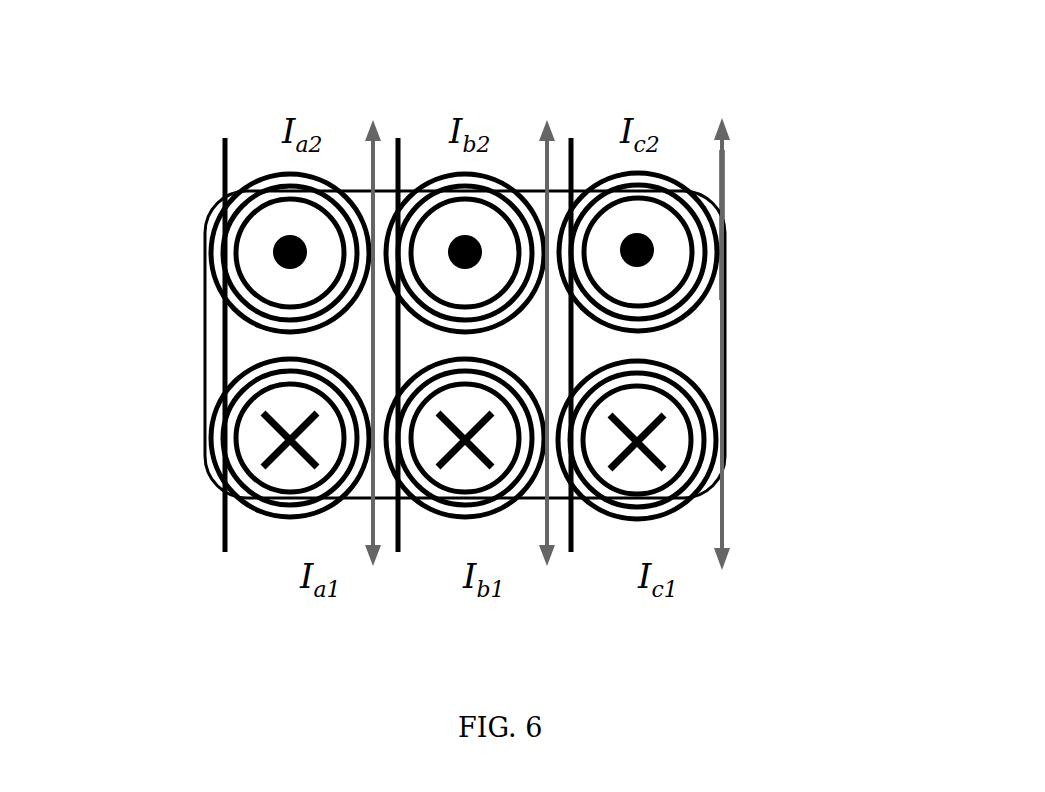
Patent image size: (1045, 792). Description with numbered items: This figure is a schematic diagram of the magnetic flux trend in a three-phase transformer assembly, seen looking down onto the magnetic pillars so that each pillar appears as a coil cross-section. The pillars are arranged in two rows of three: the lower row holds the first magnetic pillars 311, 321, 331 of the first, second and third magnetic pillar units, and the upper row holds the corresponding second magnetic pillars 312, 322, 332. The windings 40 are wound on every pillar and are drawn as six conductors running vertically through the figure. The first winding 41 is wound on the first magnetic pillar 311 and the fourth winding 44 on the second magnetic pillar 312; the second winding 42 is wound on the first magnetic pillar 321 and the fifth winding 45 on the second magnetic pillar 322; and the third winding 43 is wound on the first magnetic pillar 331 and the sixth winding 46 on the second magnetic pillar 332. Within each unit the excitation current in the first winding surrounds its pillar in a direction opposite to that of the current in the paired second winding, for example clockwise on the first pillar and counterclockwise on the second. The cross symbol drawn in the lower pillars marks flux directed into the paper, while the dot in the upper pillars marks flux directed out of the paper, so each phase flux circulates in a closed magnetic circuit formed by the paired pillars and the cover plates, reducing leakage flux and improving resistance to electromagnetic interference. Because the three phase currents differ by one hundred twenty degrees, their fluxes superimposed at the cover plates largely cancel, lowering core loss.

The windings 40 is at (488, 340).
The first winding 41 is at (374, 555).
The second winding 42 is at (560, 550).
The third winding 43 is at (723, 508).
The fourth winding 44 is at (225, 145).
The fifth winding 45 is at (397, 138).
The sixth winding 46 is at (722, 190).
The first magnetic pillar 311 is at (287, 480).
The second magnetic pillar 312 is at (257, 235).
The first magnetic pillar 321 is at (448, 472).
The second magnetic pillar 322 is at (479, 197).
The first magnetic pillar 331 is at (672, 452).
The second magnetic pillar 332 is at (672, 263).